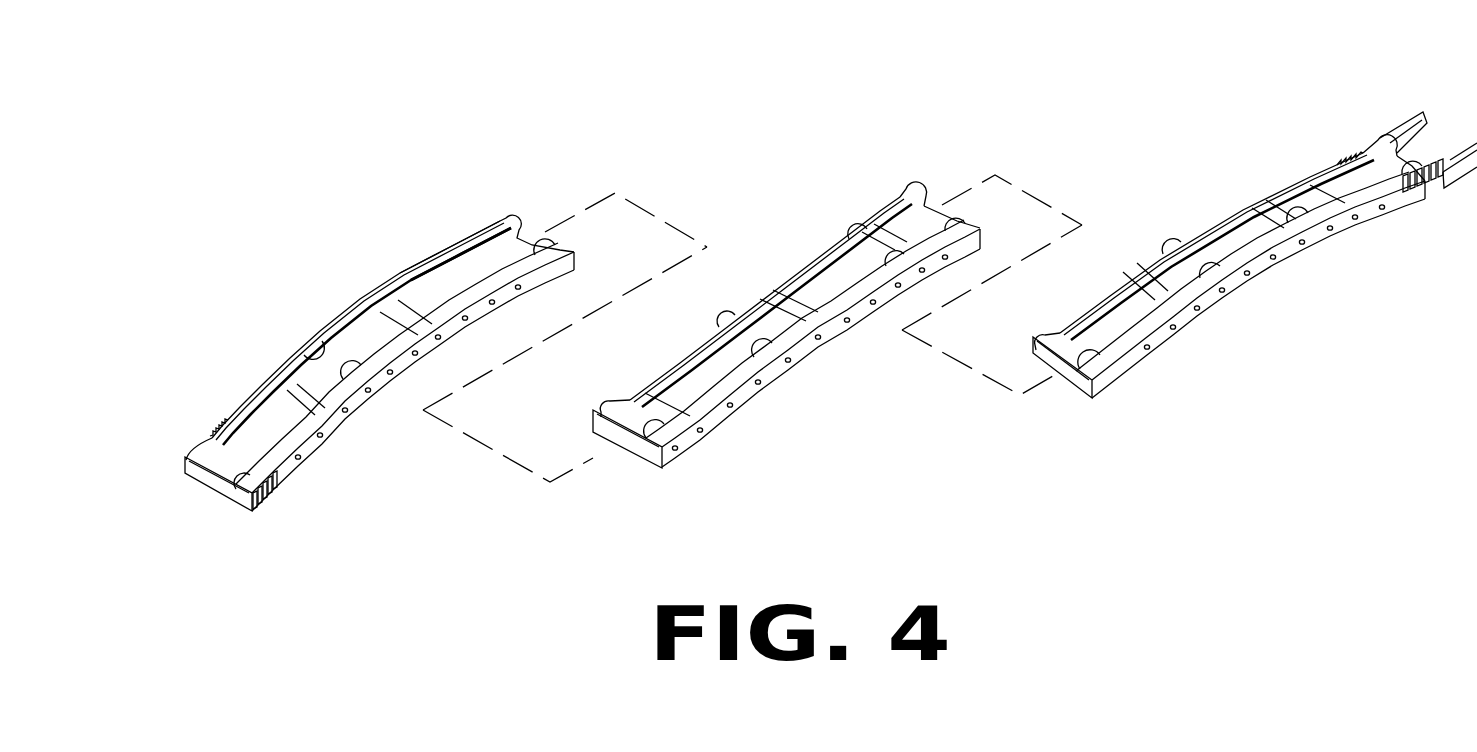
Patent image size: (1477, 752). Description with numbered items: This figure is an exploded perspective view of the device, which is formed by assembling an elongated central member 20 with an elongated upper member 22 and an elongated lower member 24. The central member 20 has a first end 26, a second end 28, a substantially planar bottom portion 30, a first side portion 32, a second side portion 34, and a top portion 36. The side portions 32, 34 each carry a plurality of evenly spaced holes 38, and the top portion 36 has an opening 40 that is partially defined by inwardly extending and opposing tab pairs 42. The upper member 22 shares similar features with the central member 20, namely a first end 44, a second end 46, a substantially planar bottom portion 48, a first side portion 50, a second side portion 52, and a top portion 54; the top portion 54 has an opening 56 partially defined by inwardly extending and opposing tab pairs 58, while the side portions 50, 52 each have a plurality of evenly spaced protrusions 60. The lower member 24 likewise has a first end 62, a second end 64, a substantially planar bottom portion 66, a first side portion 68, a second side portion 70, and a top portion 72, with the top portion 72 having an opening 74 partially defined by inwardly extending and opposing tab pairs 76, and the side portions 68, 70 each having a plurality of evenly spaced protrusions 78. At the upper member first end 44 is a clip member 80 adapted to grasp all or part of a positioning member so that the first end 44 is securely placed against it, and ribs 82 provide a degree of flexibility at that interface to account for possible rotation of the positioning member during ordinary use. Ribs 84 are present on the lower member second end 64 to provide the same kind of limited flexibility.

The central member 20 is at (740, 415).
The upper member 22 is at (1207, 215).
The lower member 24 is at (398, 277).
The first end 26 is at (882, 200).
The second end 28 is at (655, 470).
The bottom portion 30 is at (790, 300).
The first side portion 32 is at (593, 415).
The second side portion 34 is at (863, 310).
The top portion 36 is at (680, 344).
The holes 38 is at (830, 280).
The opening 40 is at (657, 400).
The tab pairs 42 is at (763, 345).
The first end 44 is at (1390, 212).
The second end 46 is at (1107, 380).
The bottom portion 48 is at (1150, 297).
The first side portion 50 is at (1163, 243).
The second side portion 52 is at (1260, 277).
The top portion 54 is at (1095, 290).
The opening 56 is at (1330, 200).
The tab pairs 58 is at (1263, 207).
The protrusions 60 is at (1357, 218).
The first end 62 is at (452, 246).
The second end 64 is at (210, 490).
The bottom portion 66 is at (292, 400).
The first side portion 68 is at (190, 462).
The second side portion 70 is at (481, 316).
The top portion 72 is at (228, 413).
The opening 74 is at (380, 328).
The tab pairs 76 is at (355, 368).
The protrusions 78 is at (396, 375).
The clip member 80 is at (1380, 130).
The ribs 82 is at (1420, 200).
The ribs 84 is at (270, 495).